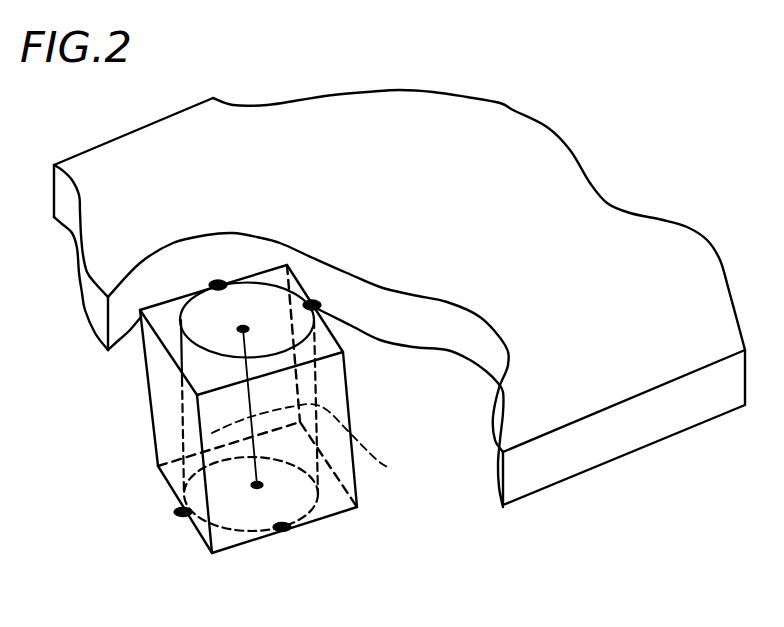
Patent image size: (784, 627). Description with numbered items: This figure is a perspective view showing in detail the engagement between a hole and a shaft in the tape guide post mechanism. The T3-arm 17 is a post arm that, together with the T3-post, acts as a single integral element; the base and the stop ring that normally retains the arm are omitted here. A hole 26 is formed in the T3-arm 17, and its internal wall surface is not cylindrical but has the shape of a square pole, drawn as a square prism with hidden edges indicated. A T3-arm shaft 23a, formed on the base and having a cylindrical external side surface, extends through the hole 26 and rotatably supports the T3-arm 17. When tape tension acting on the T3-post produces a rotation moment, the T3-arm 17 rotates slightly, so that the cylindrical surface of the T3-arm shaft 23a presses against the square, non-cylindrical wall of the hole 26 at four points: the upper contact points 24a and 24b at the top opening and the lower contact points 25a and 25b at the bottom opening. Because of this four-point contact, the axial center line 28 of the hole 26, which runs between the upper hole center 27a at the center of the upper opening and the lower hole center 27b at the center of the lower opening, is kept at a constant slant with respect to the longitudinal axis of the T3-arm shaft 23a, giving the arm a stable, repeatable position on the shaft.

The T3-arm 17 is at (677, 245).
The T3-arm shaft 23a is at (321, 444).
The upper contact point 24a is at (313, 297).
The upper contact point 24b is at (217, 277).
The lower contact point 25a is at (282, 527).
The lower contact point 25b is at (183, 512).
The hole 26 is at (358, 470).
The upper hole center 27a is at (243, 329).
The lower hole center 27b is at (257, 485).
The axial center line 28 is at (160, 477).